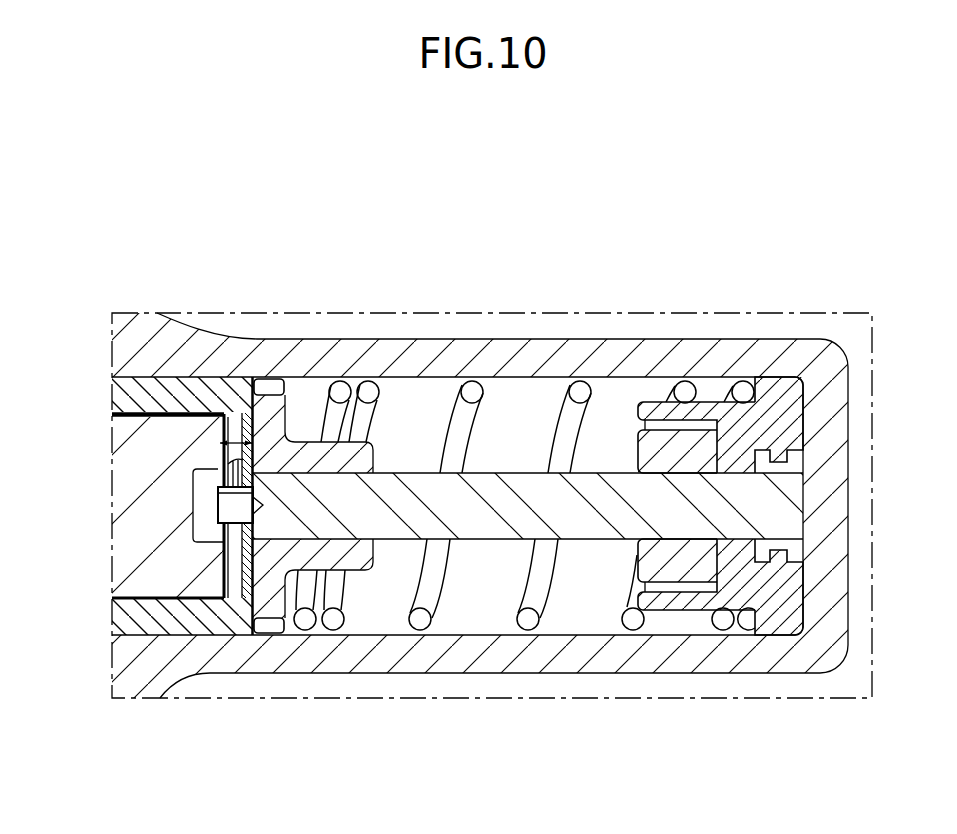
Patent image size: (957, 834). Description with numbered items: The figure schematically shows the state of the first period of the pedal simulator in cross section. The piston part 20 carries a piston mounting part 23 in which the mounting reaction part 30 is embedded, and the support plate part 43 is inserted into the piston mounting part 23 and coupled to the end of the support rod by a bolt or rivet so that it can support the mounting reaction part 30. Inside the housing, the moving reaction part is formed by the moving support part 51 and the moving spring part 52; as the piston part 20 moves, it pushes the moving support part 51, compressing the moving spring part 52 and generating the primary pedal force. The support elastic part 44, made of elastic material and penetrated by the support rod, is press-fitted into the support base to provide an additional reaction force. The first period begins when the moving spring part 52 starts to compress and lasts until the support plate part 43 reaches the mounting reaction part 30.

The piston part 20 is at (182, 506).
The piston mounting part 23 is at (160, 617).
The mounting reaction part 30 is at (158, 563).
The support plate part 43 is at (246, 436).
The support elastic part 44 is at (670, 557).
The moving support part 51 is at (275, 606).
The moving spring part 52 is at (524, 620).